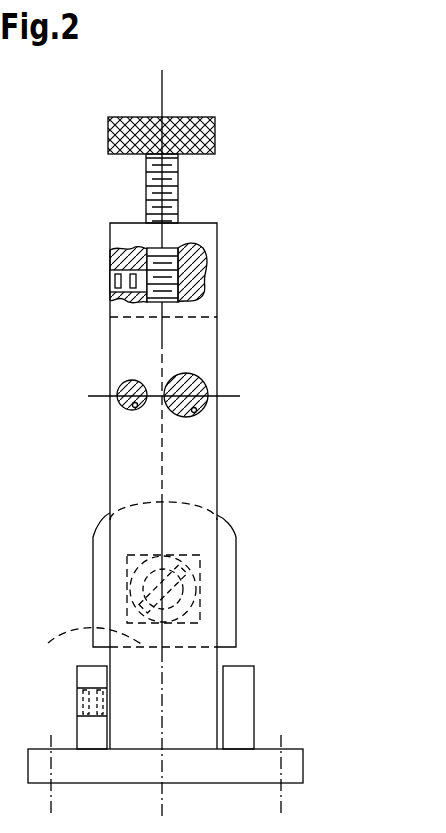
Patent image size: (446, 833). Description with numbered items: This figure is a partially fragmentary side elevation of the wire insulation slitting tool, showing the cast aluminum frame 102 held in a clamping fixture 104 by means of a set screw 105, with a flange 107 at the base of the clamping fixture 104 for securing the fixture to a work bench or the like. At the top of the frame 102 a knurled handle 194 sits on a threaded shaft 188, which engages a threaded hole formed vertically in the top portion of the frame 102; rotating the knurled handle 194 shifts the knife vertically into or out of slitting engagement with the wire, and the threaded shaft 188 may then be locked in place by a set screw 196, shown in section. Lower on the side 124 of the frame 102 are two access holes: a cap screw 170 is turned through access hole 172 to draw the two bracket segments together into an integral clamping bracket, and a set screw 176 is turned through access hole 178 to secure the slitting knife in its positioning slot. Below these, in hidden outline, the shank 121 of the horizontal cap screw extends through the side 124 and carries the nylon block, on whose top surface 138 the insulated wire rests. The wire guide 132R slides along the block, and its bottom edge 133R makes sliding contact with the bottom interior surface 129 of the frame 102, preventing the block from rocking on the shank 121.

The cast aluminum frame 102 is at (108, 238).
The clamping fixture 104 is at (245, 708).
The set screw 105 is at (82, 711).
The flange 107 is at (187, 775).
The shank 121 is at (188, 592).
The side 124 is at (203, 492).
The bottom interior surface 129 is at (72, 636).
The wire guide 132R is at (71, 580).
The bottom edge 133R is at (230, 627).
The top surface 138 is at (235, 532).
The cap screw 170 is at (196, 376).
The access hole 172 is at (195, 412).
The set screw 176 is at (119, 390).
The access hole 178 is at (137, 407).
The threaded shaft 188 is at (178, 196).
The knurled handle 194 is at (215, 134).
The set screw 196 is at (110, 282).